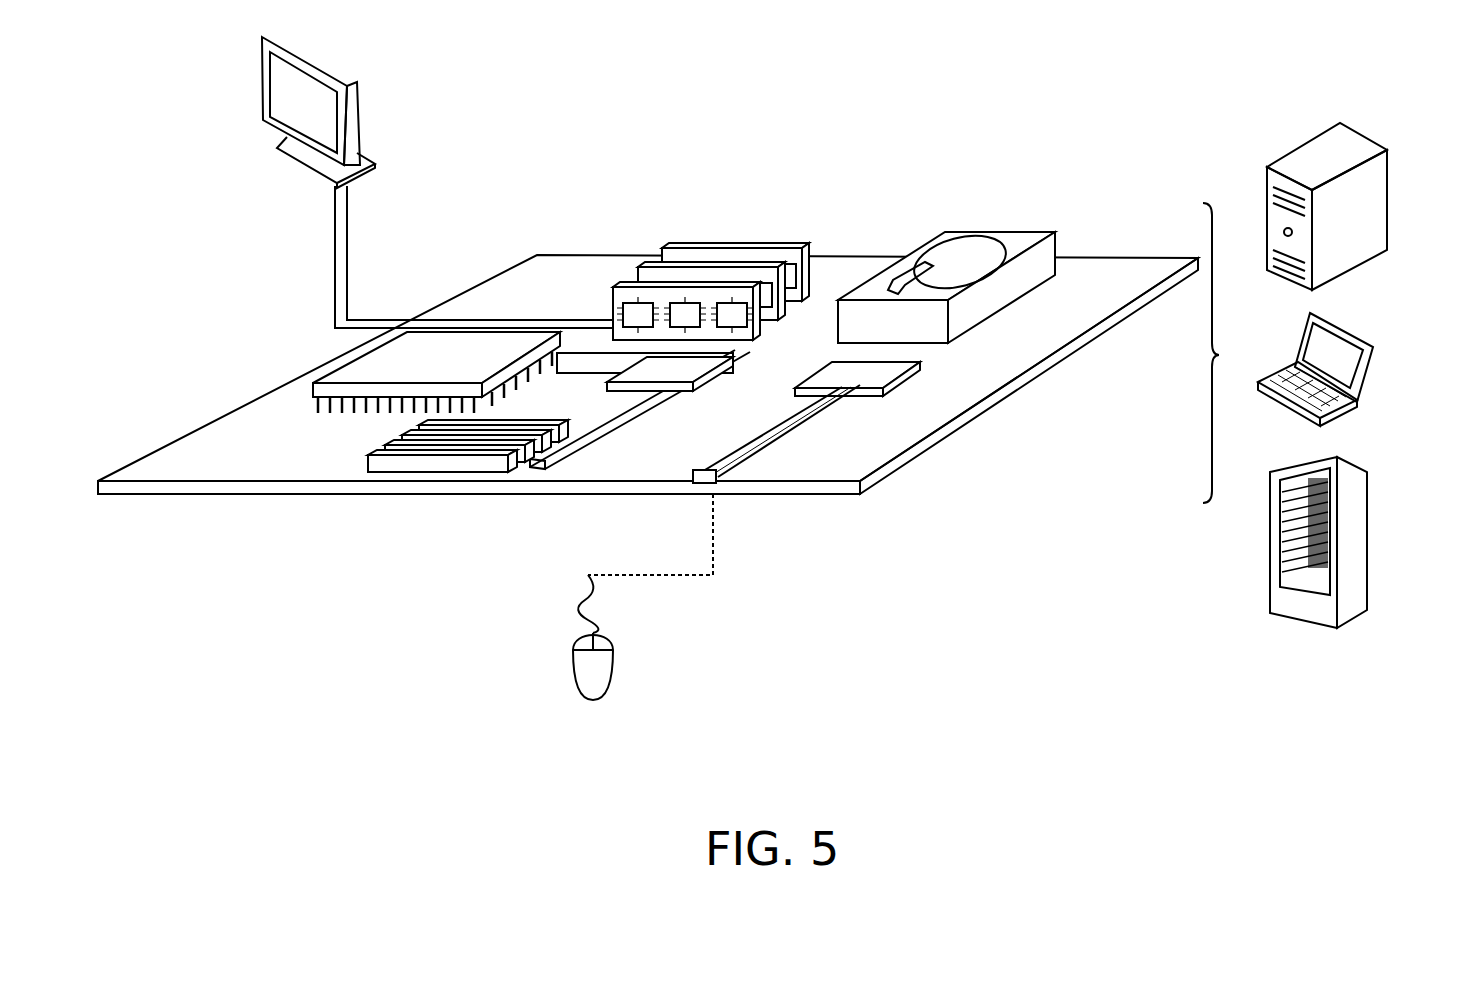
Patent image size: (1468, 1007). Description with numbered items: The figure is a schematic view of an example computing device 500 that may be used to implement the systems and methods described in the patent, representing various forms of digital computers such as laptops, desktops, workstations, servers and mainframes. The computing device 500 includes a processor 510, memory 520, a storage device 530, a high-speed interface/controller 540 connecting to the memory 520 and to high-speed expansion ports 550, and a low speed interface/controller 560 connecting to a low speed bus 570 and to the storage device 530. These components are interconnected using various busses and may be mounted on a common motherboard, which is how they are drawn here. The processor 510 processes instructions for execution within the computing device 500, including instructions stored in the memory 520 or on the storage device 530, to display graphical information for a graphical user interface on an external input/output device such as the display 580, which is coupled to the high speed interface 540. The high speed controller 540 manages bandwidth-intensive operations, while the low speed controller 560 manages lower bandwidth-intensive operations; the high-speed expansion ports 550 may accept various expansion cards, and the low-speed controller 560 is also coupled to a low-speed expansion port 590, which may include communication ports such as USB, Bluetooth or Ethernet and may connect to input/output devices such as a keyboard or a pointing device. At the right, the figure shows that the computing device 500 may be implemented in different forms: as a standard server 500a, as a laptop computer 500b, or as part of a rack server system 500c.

The computing device 500 is at (814, 102).
The processor 510 is at (308, 383).
The memory 520 is at (728, 247).
The storage device 530 is at (995, 232).
The high-speed interface/controller 540 is at (675, 392).
The high-speed expansion ports 550 is at (367, 460).
The low speed interface/controller 560 is at (847, 364).
The low speed bus 570 is at (797, 428).
The display 580 is at (259, 84).
The low-speed expansion port 590 is at (725, 478).
The standard server 500a is at (1295, 142).
The laptop computer 500b is at (1355, 332).
The rack server system 500c is at (1362, 518).